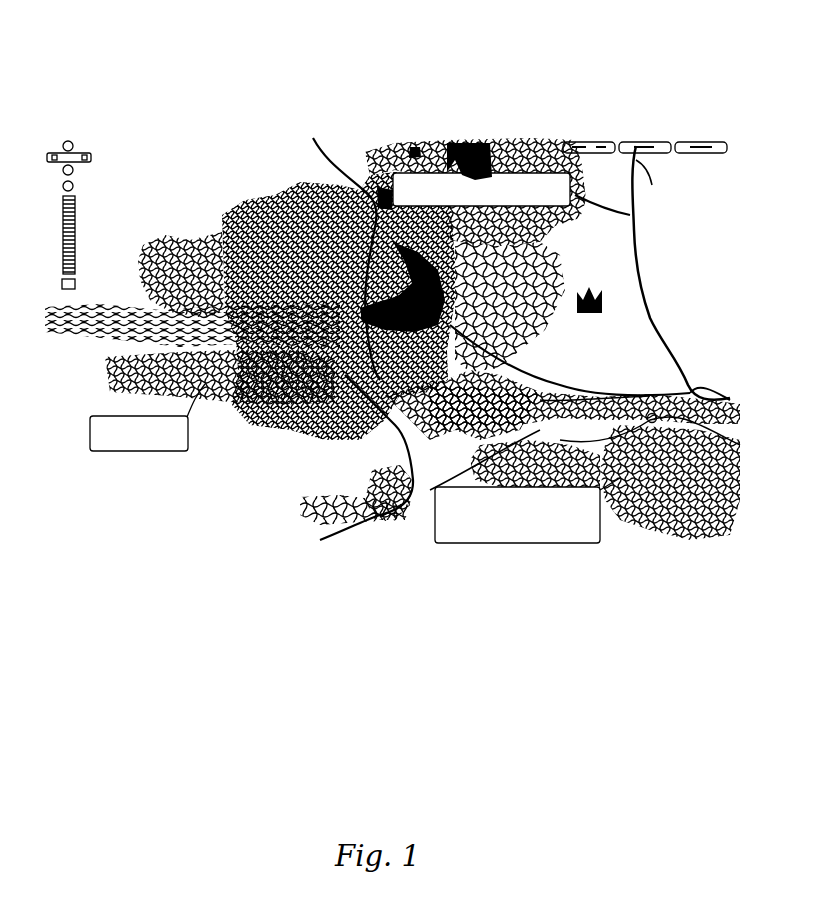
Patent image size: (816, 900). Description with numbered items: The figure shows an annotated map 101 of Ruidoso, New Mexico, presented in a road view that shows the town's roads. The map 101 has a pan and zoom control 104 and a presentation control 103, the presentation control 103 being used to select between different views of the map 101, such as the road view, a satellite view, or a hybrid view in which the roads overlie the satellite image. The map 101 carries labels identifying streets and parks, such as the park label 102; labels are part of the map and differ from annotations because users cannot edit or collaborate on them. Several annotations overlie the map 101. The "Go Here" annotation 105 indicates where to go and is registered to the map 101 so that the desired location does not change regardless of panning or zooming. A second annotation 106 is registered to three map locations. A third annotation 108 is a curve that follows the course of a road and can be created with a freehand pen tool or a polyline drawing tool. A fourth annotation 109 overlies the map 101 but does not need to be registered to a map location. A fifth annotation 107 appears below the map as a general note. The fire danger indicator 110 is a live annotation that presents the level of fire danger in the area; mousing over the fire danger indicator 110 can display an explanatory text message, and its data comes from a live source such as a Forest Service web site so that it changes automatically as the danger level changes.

The map 101 is at (205, 118).
The park label 102 is at (313, 138).
The presentation control 103 is at (637, 146).
The pan and zoom control 104 is at (77, 147).
The "Go Here" annotation 105 is at (150, 449).
The second annotation 106 is at (600, 543).
The fifth annotation 107 is at (420, 633).
The third annotation 108 is at (398, 142).
The fourth annotation 109 is at (498, 143).
The fire danger indicator 110 is at (603, 300).